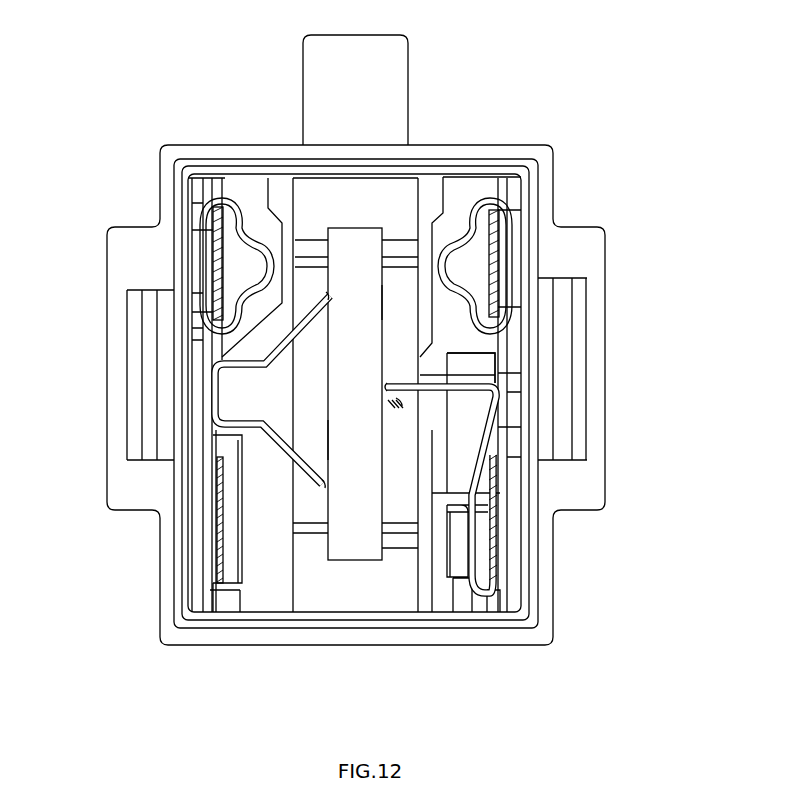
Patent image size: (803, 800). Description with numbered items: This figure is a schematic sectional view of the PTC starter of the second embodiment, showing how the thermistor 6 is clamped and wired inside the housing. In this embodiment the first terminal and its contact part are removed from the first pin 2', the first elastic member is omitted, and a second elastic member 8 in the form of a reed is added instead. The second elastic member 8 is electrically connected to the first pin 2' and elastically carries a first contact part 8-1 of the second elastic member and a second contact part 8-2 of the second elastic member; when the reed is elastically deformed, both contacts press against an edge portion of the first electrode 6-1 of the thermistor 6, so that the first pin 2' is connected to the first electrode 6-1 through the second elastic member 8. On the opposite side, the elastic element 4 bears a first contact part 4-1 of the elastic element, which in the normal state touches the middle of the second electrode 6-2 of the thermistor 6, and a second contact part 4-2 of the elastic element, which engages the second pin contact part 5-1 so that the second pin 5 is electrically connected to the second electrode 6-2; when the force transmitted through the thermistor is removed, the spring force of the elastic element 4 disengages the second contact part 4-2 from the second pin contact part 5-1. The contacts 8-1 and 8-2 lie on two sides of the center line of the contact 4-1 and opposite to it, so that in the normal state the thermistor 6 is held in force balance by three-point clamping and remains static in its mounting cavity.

The first pin 2' is at (281, 394).
The elastic element 4 is at (500, 563).
The first contact part of the elastic element 4-1 is at (402, 403).
The second contact part of the elastic element 4-2 is at (392, 388).
The second pin 5 is at (500, 343).
The second pin contact part 5-1 is at (400, 398).
The thermistor 6 is at (358, 278).
The first electrode of the thermistor 6-1 is at (328, 440).
The second electrode of the thermistor 6-2 is at (383, 302).
The second elastic member 8 is at (230, 424).
The first contact part of the second elastic member 8-1 is at (322, 487).
The second contact part of the second elastic member 8-2 is at (327, 297).